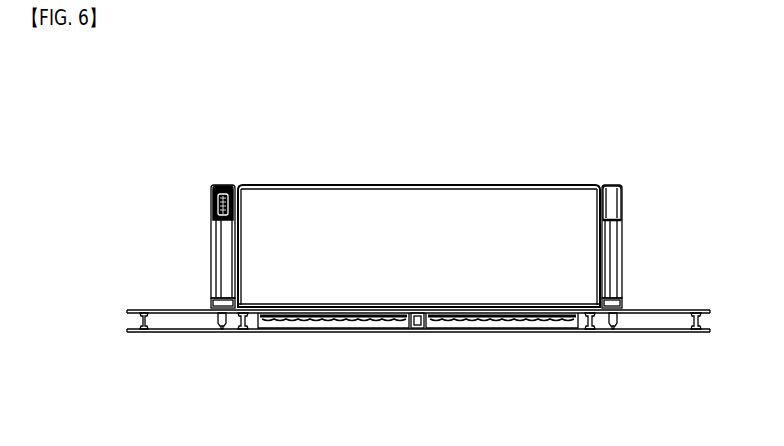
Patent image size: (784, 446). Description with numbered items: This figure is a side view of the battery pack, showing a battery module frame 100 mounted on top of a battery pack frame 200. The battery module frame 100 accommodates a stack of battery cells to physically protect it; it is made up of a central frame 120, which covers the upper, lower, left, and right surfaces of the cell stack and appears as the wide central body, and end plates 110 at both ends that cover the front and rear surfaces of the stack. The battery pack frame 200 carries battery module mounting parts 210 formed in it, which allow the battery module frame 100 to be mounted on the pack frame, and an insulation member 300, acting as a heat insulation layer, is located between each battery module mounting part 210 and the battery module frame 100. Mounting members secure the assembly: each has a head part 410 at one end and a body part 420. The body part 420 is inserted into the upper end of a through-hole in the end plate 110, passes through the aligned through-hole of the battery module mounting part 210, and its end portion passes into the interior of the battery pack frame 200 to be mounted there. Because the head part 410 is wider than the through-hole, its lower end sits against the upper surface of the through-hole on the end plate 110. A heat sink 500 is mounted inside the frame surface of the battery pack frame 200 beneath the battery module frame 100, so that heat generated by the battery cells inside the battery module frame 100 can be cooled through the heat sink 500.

The battery module frame 100 is at (523, 164).
The central frame 120 is at (402, 184).
The end plate 110 is at (225, 248).
The head part 410 is at (213, 216).
The insulation member 300 is at (212, 298).
The battery pack frame 200 is at (343, 339).
The battery module mounting part 210 is at (217, 302).
The body part 420 is at (222, 330).
The heat sink 500 is at (483, 322).